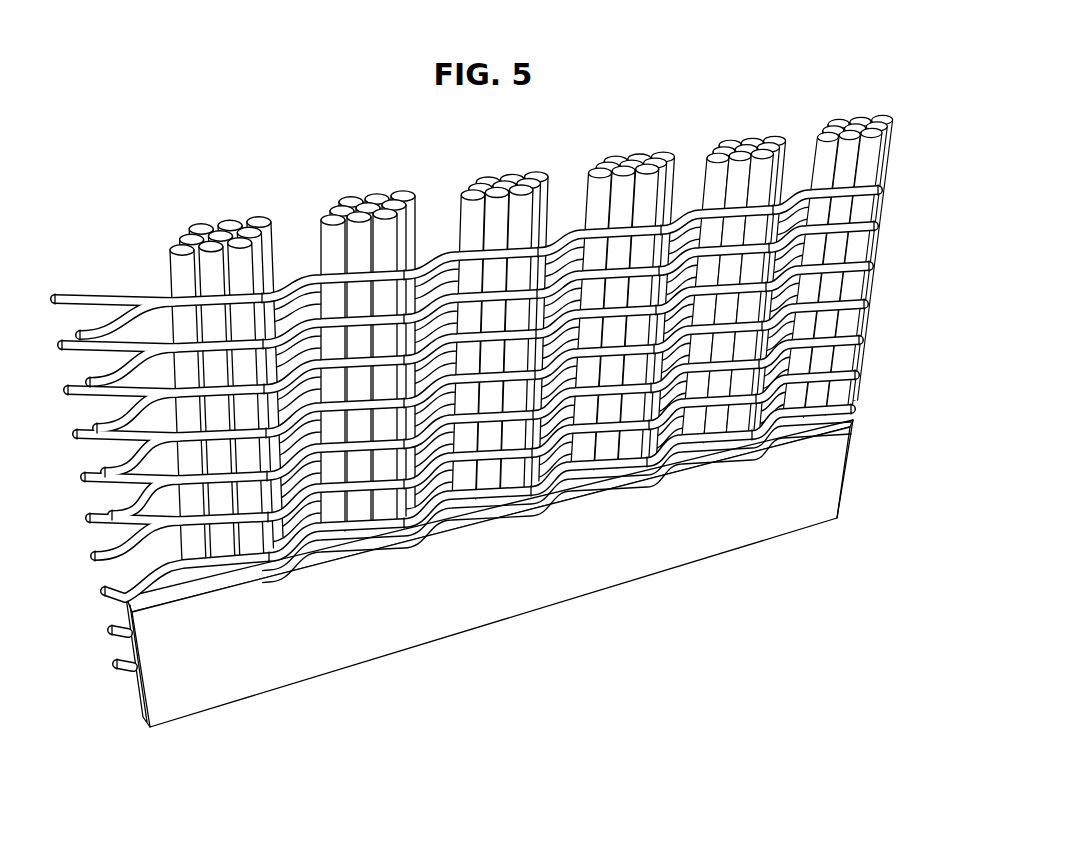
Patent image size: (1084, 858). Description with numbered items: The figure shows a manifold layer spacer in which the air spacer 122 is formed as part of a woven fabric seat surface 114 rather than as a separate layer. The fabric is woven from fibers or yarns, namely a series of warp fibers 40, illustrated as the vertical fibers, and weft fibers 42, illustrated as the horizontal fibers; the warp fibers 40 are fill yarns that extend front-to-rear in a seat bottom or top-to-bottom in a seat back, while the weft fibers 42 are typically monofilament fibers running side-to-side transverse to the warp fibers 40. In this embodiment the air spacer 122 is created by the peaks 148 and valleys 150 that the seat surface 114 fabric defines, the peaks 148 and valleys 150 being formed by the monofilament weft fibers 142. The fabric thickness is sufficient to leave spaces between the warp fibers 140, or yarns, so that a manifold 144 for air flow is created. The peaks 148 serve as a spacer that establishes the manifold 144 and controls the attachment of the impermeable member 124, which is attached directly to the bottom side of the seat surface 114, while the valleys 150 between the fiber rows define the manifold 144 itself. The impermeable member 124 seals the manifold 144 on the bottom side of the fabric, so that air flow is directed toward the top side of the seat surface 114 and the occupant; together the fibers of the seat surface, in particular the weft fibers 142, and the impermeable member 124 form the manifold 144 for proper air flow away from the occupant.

The warp fibers 40 is at (368, 207).
The warp fibers 140 is at (566, 297).
The weft fibers 42 is at (501, 396).
The weft fibers 142 is at (458, 442).
The seat surface 114 is at (501, 396).
The air spacer 122 is at (906, 203).
The impermeable member 124 is at (826, 462).
The manifold 144 is at (478, 503).
The peaks 148 is at (619, 222).
The valleys 150 is at (466, 246).